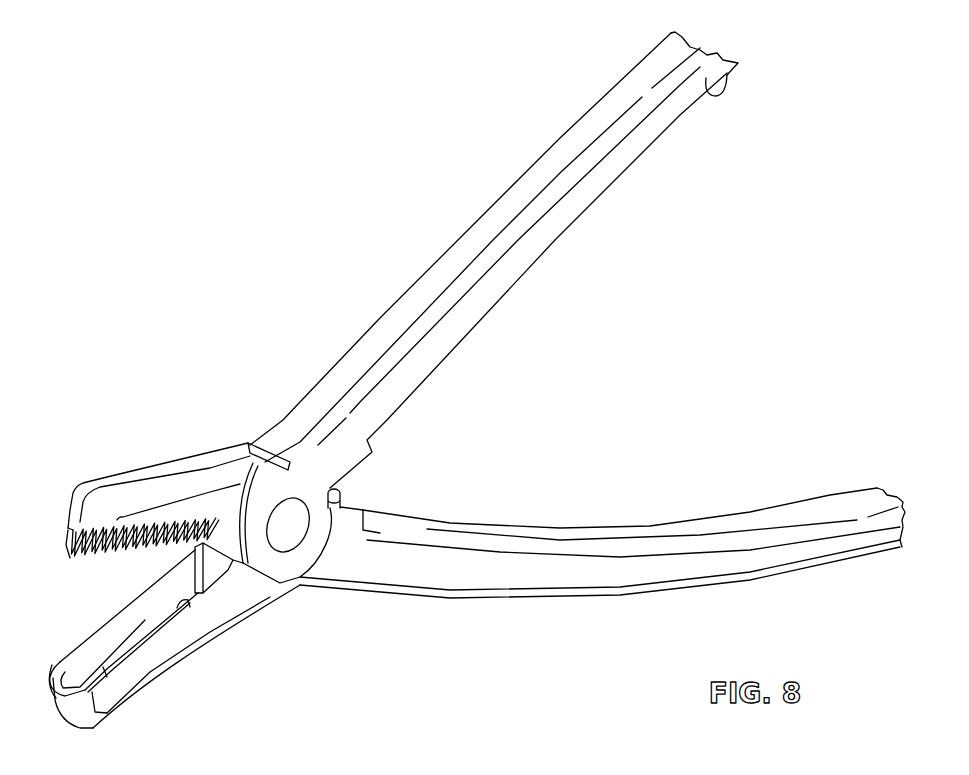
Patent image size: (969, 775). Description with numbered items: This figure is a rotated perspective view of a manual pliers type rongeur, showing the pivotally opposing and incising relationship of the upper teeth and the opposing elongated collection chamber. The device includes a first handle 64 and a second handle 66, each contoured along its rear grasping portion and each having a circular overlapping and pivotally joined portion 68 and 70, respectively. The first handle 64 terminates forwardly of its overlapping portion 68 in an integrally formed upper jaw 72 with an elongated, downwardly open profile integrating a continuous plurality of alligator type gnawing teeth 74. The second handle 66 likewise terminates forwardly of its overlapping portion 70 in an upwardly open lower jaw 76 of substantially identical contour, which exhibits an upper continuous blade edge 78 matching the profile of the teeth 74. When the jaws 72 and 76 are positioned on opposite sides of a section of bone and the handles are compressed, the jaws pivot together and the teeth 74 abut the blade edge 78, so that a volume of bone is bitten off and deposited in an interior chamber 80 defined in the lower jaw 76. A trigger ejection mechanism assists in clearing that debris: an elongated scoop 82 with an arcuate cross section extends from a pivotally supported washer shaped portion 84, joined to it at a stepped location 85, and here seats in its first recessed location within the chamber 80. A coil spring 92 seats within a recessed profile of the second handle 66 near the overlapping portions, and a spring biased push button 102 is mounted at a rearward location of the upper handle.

The first handle 64 is at (503, 528).
The second handle 66 is at (415, 303).
The circular overlapping and pivotally joined portion 68 is at (193, 527).
The circular overlapping and pivotally joined portion 70 is at (296, 525).
The upper jaw 72 is at (187, 473).
The alligator type gnawing teeth 74 is at (73, 532).
The lower jaw 76 is at (155, 672).
The continuous blade edge 78 is at (92, 638).
The interior chamber 80 is at (107, 677).
The elongated scoop 82 is at (190, 610).
The washer shaped portion 84 is at (258, 465).
The stepped location 85 is at (220, 587).
The coil spring 92 is at (348, 495).
The push button 102 is at (723, 88).